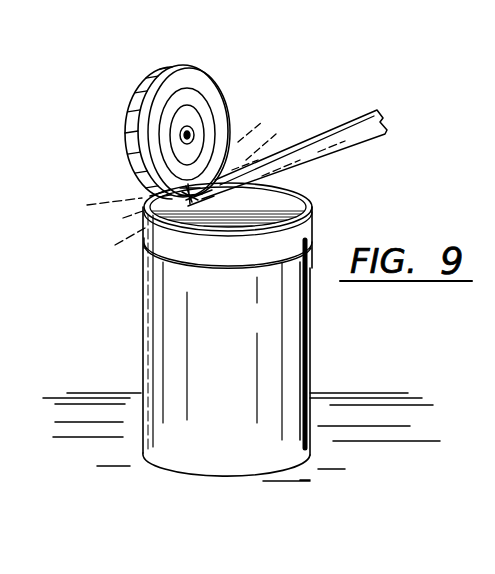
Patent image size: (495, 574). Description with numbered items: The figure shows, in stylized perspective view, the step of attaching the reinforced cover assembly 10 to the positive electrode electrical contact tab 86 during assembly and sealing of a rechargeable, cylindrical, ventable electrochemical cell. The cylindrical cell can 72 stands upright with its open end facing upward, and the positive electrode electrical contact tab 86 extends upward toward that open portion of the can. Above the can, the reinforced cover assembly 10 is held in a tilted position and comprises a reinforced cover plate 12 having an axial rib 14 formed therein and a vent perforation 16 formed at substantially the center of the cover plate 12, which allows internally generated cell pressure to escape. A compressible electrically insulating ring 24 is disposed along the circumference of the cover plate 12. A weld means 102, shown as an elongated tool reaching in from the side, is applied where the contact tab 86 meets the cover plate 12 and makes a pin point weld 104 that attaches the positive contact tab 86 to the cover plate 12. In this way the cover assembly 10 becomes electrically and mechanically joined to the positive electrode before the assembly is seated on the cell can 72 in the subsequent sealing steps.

The reinforced cover assembly 10 is at (130, 98).
The reinforced cover plate 12 is at (215, 116).
The axial rib 14 is at (195, 110).
The vent perforation 16 is at (184, 128).
The compressible electrically insulating ring 24 is at (223, 93).
The cylindrical cell can 72 is at (142, 321).
The positive electrode electrical contact tab 86 is at (143, 197).
The weld means 102 is at (351, 133).
The pin point weld 104 is at (212, 192).